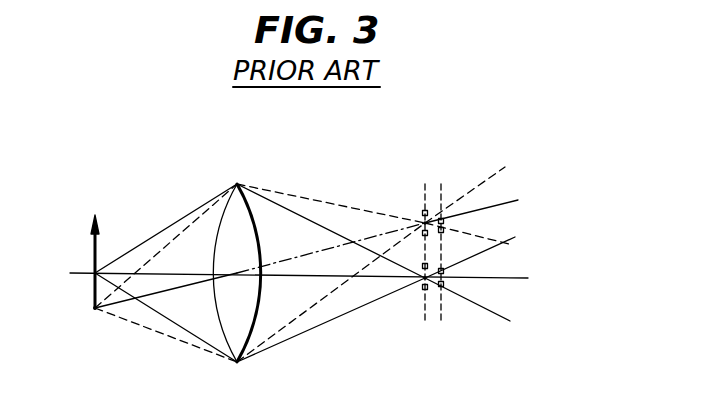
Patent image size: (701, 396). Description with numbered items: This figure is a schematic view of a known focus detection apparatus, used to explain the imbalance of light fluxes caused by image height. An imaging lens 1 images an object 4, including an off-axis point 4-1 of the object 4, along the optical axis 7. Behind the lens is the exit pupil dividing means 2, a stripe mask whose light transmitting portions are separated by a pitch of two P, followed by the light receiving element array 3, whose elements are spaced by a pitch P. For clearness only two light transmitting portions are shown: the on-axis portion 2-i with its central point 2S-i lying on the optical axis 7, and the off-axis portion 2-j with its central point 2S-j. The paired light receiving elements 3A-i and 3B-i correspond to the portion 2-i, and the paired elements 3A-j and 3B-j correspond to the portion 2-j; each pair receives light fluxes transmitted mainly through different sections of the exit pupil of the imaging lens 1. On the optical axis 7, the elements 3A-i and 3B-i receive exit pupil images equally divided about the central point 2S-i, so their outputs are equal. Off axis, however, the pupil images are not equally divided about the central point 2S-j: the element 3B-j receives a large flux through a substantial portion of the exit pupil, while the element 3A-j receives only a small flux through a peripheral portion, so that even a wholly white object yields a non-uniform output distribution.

The imaging lens 1 is at (248, 202).
The optical axis 7 is at (305, 276).
The object 4 is at (92, 250).
The point of the object 4-1 is at (94, 311).
The exit pupil dividing means 2 is at (425, 320).
The light receiving element array 3 is at (441, 320).
The central point of light transmitting portion 2-j 2S-j is at (424, 221).
The light transmitting portion 2-j is at (422, 223).
The light receiving element 3B-j is at (443, 219).
The light receiving element 3A-j is at (443, 229).
The central point of light transmitting portion 2-i 2S-i is at (424, 280).
The light transmitting portion 2-i is at (425, 281).
The light receiving element 3B-i is at (443, 271).
The light receiving element 3A-i is at (443, 284).